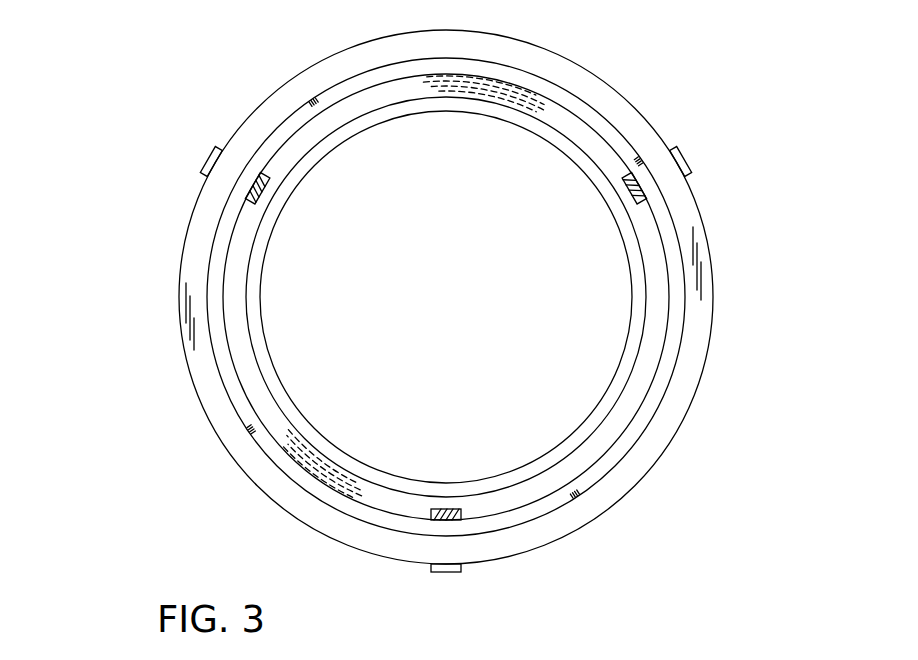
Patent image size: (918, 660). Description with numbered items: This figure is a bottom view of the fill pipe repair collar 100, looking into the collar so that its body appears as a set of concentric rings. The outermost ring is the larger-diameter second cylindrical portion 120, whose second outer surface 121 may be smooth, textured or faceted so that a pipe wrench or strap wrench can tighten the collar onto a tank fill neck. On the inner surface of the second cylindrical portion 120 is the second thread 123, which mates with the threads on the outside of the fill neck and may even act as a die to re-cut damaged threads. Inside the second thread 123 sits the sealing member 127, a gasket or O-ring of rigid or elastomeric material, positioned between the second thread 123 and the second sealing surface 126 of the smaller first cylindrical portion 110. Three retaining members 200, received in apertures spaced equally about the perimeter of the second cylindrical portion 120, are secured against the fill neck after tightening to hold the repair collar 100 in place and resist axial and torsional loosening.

The repair collar 100 is at (166, 76).
The first cylindrical portion 110 is at (270, 237).
The second cylindrical portion 120 is at (492, 297).
The second outer surface 121 is at (714, 282).
The second thread 123 is at (667, 368).
The second sealing surface 126 is at (370, 473).
The sealing member 127 is at (247, 375).
The retaining member 200 is at (204, 164).